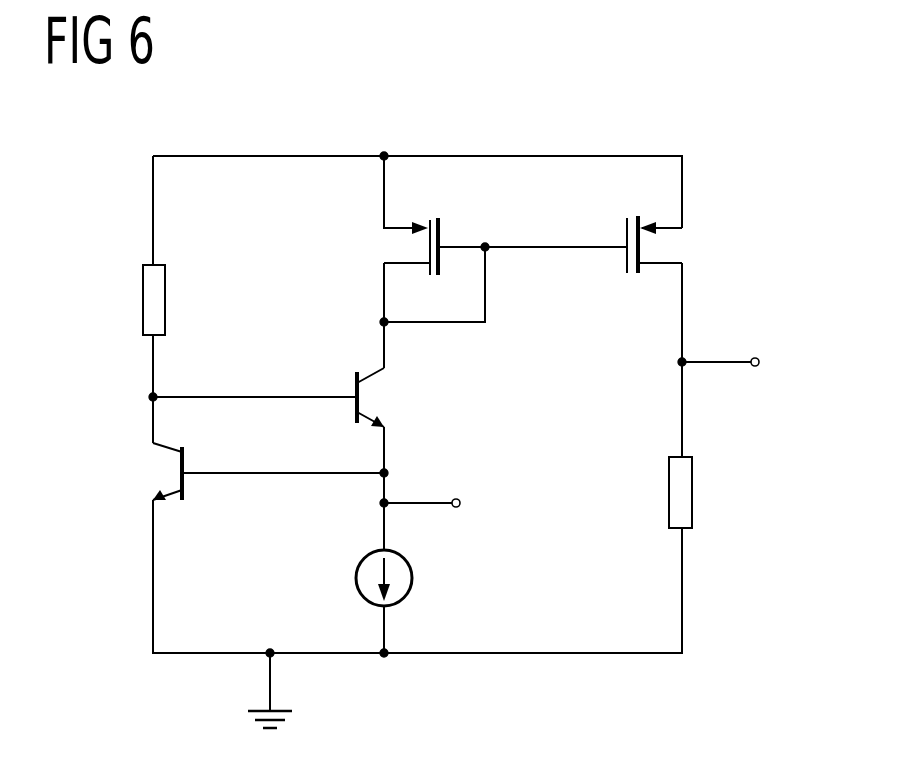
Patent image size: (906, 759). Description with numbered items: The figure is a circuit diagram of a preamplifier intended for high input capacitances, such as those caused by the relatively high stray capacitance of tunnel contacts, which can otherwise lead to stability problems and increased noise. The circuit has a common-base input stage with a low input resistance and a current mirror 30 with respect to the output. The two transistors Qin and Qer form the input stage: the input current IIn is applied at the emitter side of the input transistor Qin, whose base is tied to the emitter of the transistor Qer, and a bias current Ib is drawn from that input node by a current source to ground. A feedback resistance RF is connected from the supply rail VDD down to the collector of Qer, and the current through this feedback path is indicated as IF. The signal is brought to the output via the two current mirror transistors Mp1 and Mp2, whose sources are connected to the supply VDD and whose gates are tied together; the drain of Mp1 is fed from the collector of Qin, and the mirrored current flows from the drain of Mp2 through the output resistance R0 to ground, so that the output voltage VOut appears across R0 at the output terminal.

The current mirror 30 is at (584, 198).
The supply voltage VDD is at (407, 132).
The feedback resistance RF is at (143, 303).
The transistor Qin is at (353, 387).
The transistor Qer is at (185, 497).
The current mirror transistor Mp1 is at (442, 232).
The current mirror transistor Mp2 is at (625, 263).
The output voltage VOut is at (722, 358).
The output resistance R0 is at (692, 488).
The input current IIn is at (425, 502).
The feedback current IF is at (137, 538).
The bias current Ib is at (431, 538).